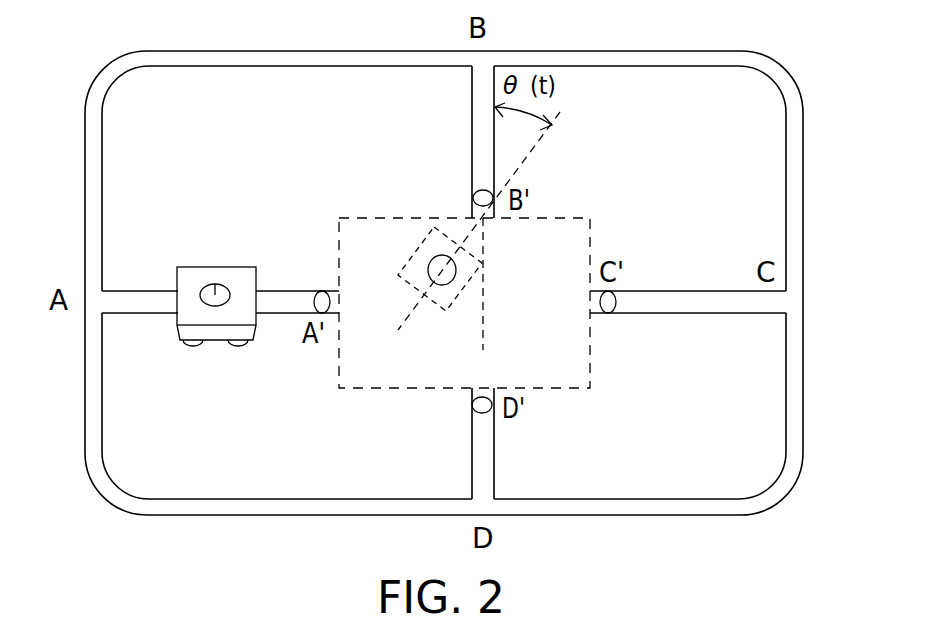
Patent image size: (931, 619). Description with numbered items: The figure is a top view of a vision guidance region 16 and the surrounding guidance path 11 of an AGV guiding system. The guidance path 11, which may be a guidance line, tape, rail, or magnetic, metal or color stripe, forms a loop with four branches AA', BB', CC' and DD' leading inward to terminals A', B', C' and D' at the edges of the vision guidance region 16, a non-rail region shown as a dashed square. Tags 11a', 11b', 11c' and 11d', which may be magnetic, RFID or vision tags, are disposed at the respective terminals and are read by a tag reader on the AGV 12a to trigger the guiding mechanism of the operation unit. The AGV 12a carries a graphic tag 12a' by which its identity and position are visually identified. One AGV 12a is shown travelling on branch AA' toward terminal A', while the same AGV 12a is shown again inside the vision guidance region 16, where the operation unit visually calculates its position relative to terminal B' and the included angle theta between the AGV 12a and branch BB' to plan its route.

The guidance path 11 is at (620, 50).
The tag 11a' is at (301, 262).
The tag 11b' is at (450, 179).
The tag 11c' is at (627, 331).
The tag 11d' is at (450, 427).
The AGV 12a is at (313, 278).
The graphic tag 12a' is at (337, 283).
The vision guidance region 16 is at (559, 217).